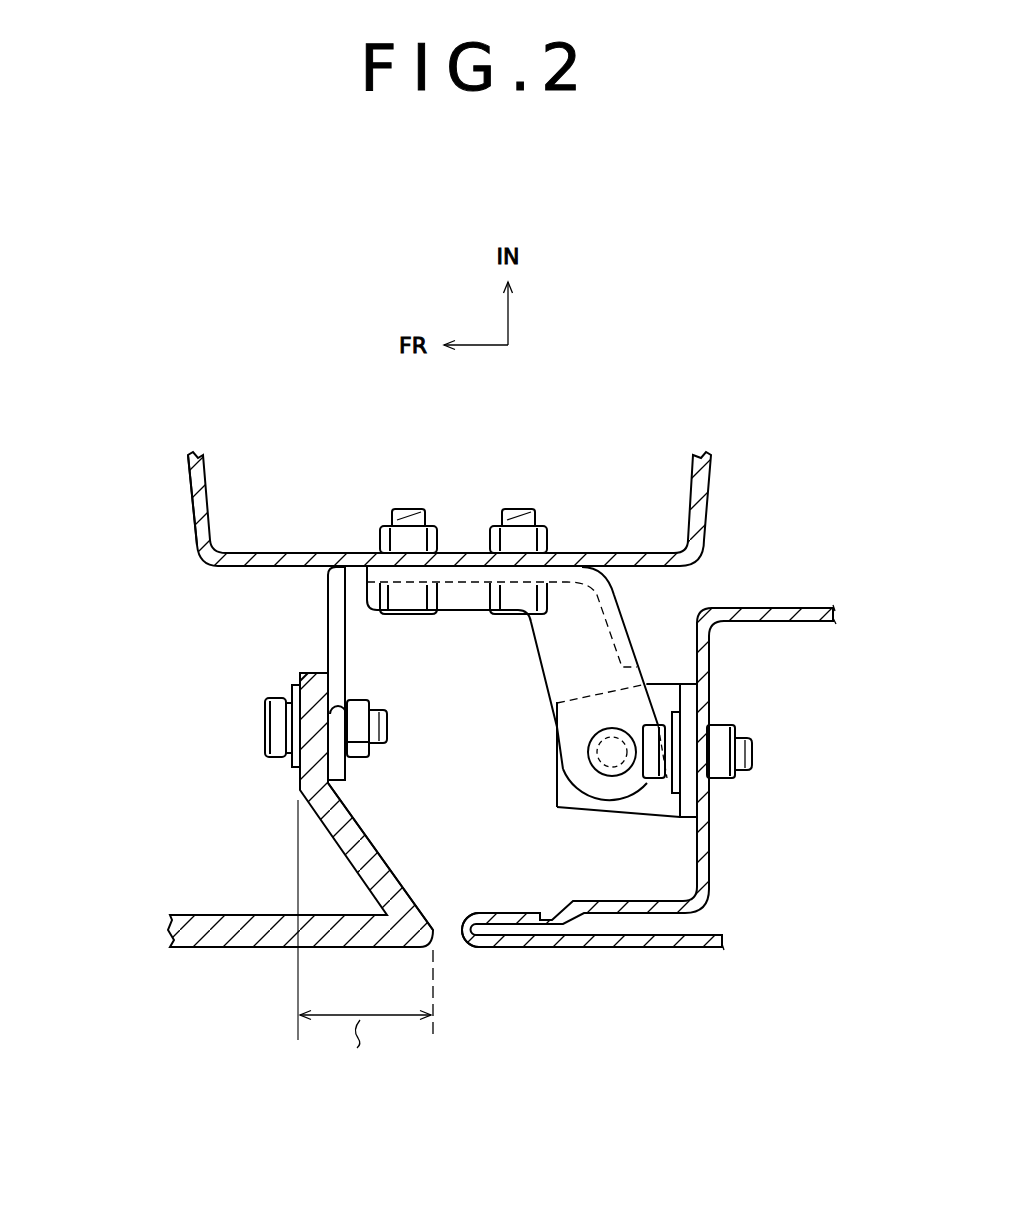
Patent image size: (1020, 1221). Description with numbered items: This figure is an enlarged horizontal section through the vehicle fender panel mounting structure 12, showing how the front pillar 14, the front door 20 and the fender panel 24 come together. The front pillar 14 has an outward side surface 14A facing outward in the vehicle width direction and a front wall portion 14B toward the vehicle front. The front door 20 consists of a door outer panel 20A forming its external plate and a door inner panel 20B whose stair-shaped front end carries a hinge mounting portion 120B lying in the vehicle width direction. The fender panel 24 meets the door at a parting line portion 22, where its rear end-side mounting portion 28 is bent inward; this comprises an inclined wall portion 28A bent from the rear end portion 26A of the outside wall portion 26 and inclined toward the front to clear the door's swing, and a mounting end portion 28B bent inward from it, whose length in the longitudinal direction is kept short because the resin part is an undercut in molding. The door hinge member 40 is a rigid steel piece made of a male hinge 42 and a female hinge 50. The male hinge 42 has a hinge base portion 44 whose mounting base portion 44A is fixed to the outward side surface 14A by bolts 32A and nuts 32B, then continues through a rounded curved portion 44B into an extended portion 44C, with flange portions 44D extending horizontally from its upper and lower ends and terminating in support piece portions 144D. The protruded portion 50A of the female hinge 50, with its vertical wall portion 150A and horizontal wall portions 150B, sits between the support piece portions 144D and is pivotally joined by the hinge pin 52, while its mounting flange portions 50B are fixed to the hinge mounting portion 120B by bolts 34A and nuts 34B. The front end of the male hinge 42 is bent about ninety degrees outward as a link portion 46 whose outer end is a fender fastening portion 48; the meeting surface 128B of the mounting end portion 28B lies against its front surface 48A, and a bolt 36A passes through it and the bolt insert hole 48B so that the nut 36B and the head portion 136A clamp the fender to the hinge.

The vehicle fender panel mounting structure 12 is at (142, 617).
The front pillar 14 is at (400, 539).
The outward side surface 14A is at (304, 567).
The front wall portion 14B is at (192, 512).
The front door 20 is at (644, 789).
The door outer panel 20A is at (710, 948).
The door inner panel 20B is at (703, 718).
The hinge mounting portion 120B is at (697, 852).
The horizontal wall portions 150B is at (666, 678).
The parting line portion 22 is at (452, 955).
The fender panel 24 is at (324, 875).
The outside wall portion 26 is at (297, 964).
The rear end portion 26A is at (353, 948).
The rear end-side mounting portion 28 is at (340, 801).
The inclined wall portion 28A is at (387, 853).
The mounting end portion 28B is at (294, 778).
The meeting surface 128B is at (333, 781).
The bolts 32A is at (517, 614).
The nuts 32B is at (380, 536).
The bolts 34A is at (640, 788).
The nuts 34B is at (722, 724).
The bolt 36A is at (295, 717).
The head portion 136A is at (265, 720).
The nut 36B is at (364, 759).
The door hinge member 40 is at (564, 666).
The male hinge 42 is at (527, 617).
The hinge base portion 44 is at (547, 617).
The mounting base portion 44A is at (476, 556).
The curved portion 44B is at (600, 570).
The extended portion 44C is at (627, 622).
The flange portions 44D is at (558, 705).
The support piece portion 144D is at (577, 737).
The link portion 46 is at (352, 656).
The fender fastening portion 48 is at (338, 717).
The front surface 48A is at (307, 675).
The bolt insert hole 48B is at (340, 710).
The female hinge 50 is at (641, 790).
The protruded portion 50A is at (578, 822).
The mounting flange portions 50B is at (683, 810).
The vertical wall portion 150A is at (557, 778).
The hinge pin 52 is at (608, 727).